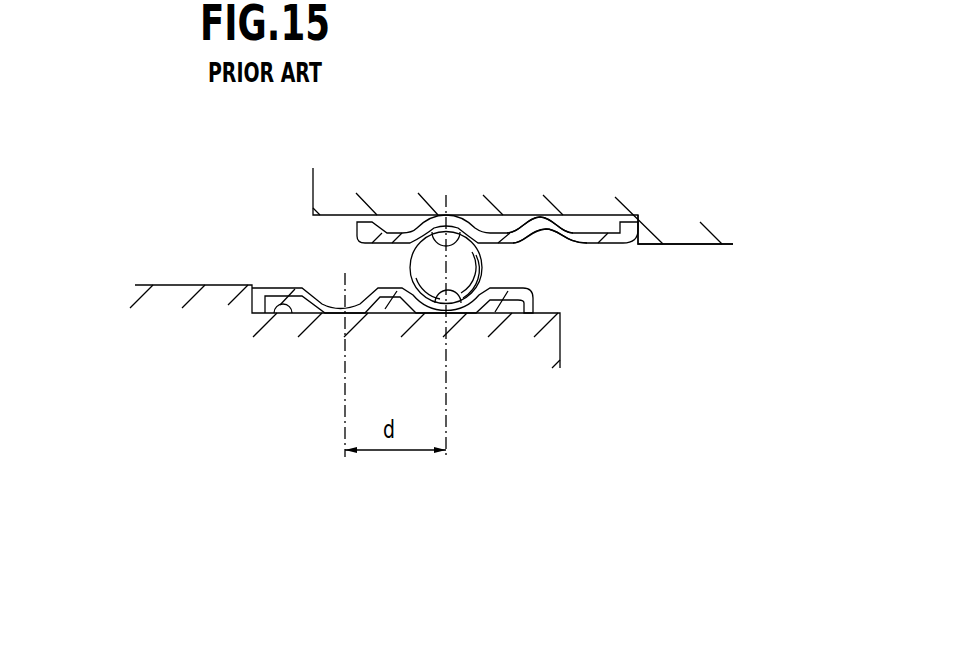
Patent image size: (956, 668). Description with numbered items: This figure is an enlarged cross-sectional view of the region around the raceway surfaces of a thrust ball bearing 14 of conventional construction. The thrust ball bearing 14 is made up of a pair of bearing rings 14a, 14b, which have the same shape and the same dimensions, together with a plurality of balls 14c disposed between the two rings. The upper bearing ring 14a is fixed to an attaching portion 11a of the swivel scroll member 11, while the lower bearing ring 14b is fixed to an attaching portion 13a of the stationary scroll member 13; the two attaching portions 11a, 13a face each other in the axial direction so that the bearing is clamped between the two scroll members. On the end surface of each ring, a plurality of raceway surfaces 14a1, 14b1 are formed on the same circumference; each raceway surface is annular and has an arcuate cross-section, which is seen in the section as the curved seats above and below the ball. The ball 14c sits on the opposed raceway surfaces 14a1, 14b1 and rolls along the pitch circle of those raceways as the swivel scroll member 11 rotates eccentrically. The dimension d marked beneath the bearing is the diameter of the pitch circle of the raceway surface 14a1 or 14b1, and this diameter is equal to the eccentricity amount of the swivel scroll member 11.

The swivel scroll member 11 is at (712, 244).
The attaching portion 11a is at (593, 215).
The stationary scroll member 13 is at (166, 285).
The attaching portion 13a is at (290, 313).
The thrust ball bearing 14 is at (220, 220).
The bearing ring 14a is at (357, 240).
The raceway surface 14a1 is at (460, 230).
The ball 14c is at (420, 262).
The bearing ring 14b is at (525, 290).
The raceway surface 14b1 is at (460, 317).